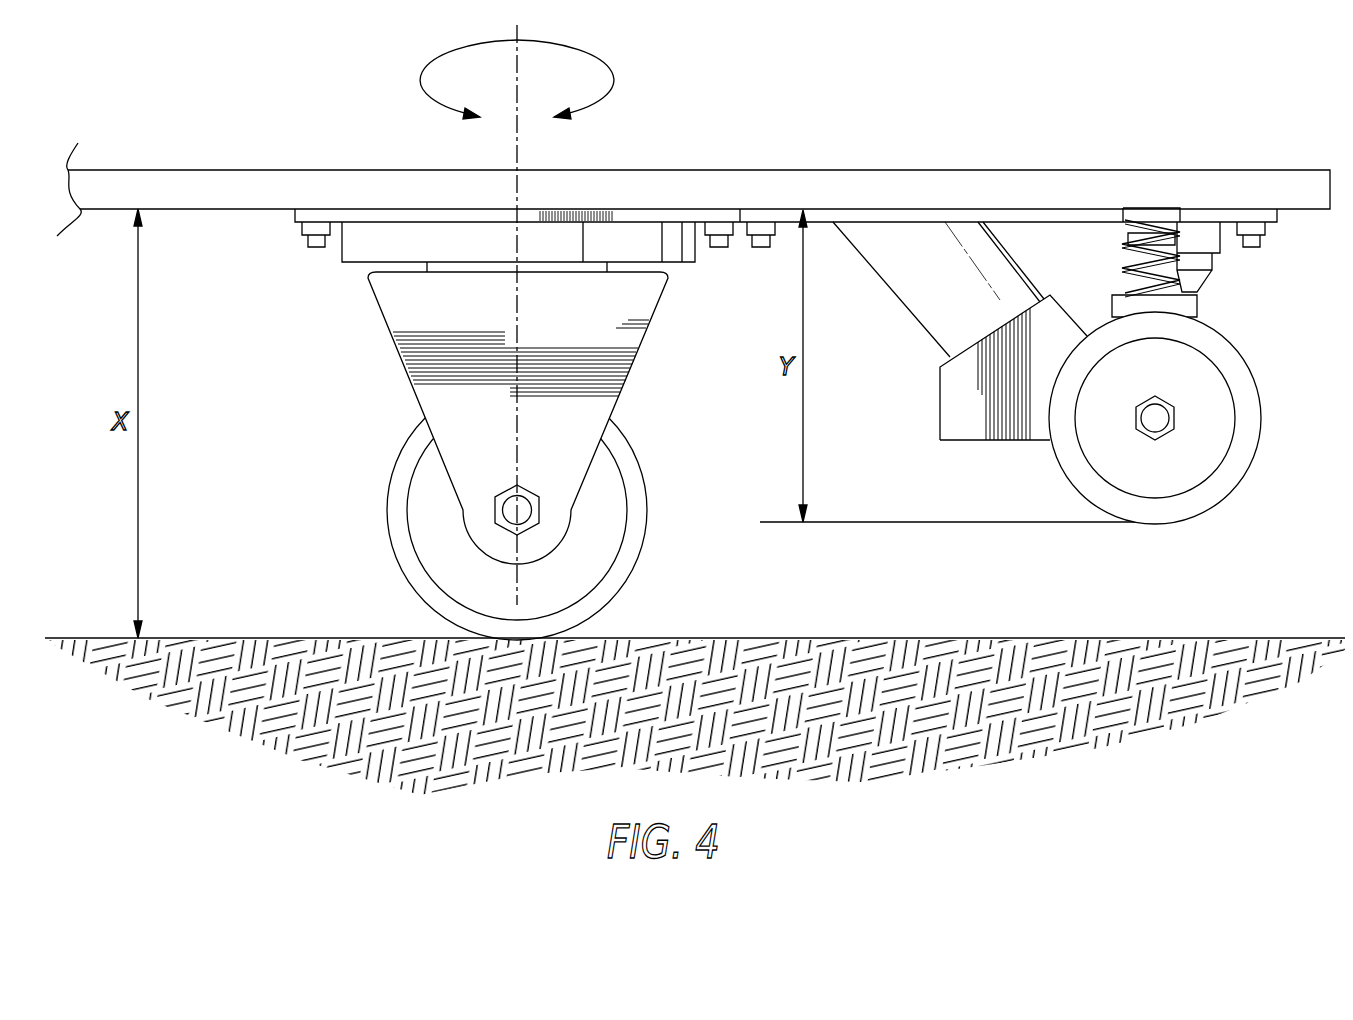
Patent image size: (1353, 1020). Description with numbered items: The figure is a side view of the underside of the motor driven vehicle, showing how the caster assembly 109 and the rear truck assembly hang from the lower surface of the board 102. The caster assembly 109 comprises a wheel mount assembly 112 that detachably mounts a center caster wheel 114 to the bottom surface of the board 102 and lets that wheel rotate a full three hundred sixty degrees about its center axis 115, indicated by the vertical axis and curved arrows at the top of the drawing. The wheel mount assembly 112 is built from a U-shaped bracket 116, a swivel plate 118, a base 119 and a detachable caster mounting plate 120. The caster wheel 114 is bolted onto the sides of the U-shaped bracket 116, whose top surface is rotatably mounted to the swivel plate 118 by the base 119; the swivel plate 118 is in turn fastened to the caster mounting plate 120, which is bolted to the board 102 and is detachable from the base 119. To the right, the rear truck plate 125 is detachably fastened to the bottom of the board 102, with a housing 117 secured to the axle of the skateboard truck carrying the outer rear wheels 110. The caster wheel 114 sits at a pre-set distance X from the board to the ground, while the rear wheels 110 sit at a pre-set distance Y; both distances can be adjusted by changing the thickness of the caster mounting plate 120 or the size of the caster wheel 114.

The board 102 is at (1155, 167).
The caster assembly 109 is at (435, 242).
The outer rear wheels 110 is at (1255, 375).
The wheel mount assembly 112 is at (388, 397).
The center caster wheel 114 is at (607, 492).
The center axis 115 is at (520, 25).
The U-shaped bracket 116 is at (417, 323).
The housing 117 is at (952, 397).
The swivel plate 118 is at (355, 252).
The base 119 is at (560, 265).
The detachable caster mounting plate 120 is at (717, 215).
The rear truck plate 125 is at (1053, 215).